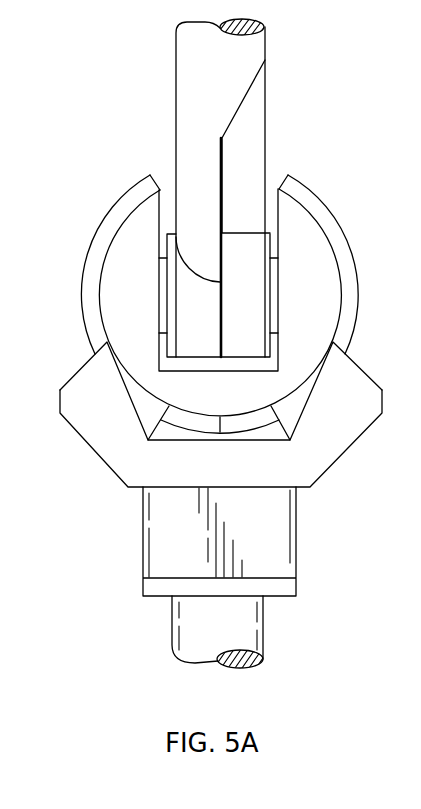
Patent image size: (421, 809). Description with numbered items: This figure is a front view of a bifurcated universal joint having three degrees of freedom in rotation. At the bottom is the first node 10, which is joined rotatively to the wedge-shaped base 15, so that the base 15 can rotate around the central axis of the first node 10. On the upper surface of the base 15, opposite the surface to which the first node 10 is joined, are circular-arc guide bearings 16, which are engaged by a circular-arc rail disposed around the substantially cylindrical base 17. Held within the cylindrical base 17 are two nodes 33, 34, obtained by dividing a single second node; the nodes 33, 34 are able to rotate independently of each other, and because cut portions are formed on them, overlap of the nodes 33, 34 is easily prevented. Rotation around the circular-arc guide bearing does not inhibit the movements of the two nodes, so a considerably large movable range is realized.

The first node 10 is at (250, 620).
The base 15 is at (317, 460).
The circular-arc guide bearings 16 is at (95, 365).
The cylindrical base 17 is at (310, 243).
The node 33 is at (187, 80).
The node 34 is at (253, 127).